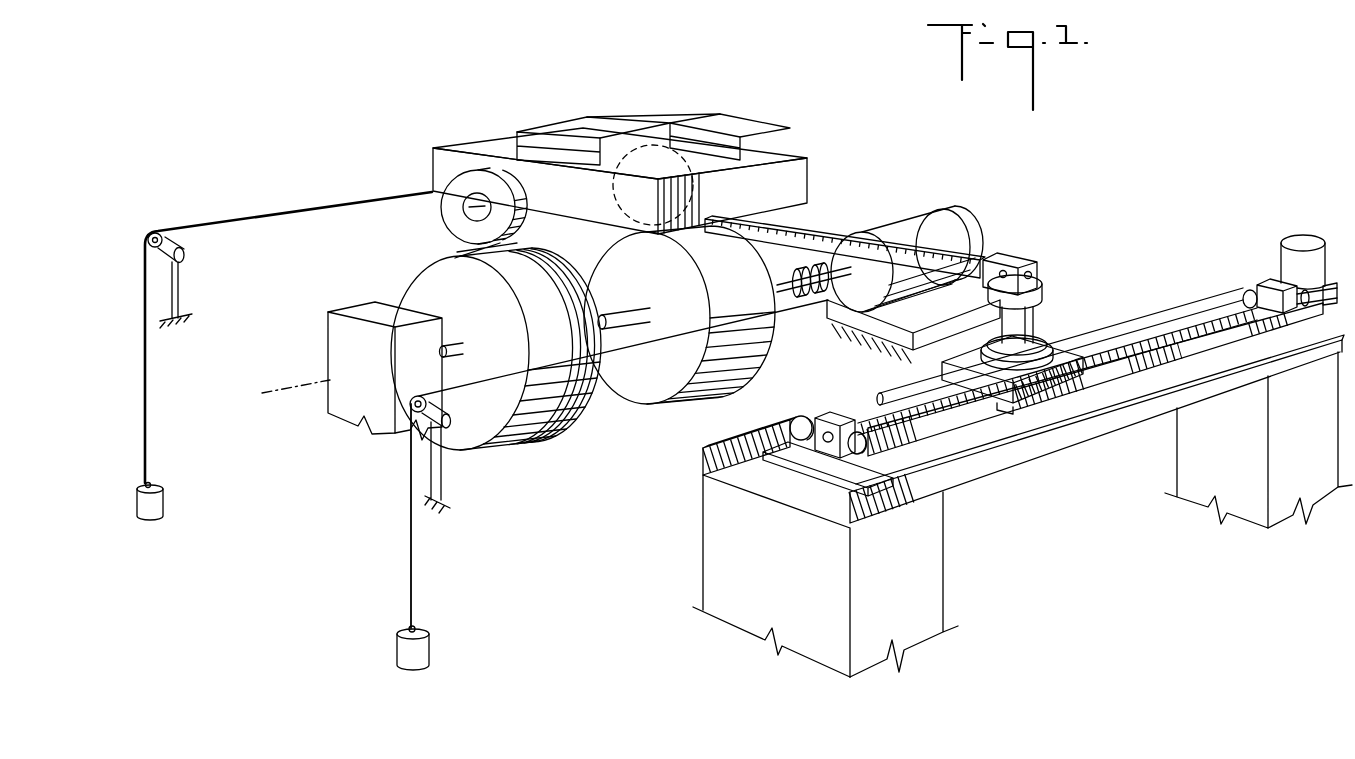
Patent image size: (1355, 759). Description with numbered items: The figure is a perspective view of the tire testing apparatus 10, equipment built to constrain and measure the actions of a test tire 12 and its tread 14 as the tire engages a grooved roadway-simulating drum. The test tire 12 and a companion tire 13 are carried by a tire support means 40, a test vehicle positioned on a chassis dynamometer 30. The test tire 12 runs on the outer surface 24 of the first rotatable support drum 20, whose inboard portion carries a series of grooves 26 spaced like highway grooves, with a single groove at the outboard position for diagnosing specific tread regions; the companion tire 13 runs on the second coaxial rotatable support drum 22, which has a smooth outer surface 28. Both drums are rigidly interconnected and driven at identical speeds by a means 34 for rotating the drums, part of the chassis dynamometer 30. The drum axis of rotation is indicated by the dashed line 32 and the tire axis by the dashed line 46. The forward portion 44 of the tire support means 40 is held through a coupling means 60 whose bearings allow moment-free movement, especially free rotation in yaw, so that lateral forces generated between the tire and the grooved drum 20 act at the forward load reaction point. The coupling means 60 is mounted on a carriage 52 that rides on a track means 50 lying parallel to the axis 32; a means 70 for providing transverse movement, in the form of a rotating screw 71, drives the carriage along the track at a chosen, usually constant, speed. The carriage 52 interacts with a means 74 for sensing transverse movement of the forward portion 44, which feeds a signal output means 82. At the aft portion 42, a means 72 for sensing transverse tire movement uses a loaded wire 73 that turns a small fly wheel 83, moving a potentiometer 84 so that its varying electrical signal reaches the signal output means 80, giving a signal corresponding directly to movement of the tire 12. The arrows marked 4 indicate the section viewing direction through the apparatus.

The section line 4- 4 is at (385, 142).
The tire testing apparatus 10 is at (1066, 178).
The test tire 12 is at (462, 207).
The companion tire 13 is at (702, 128).
The tire tread 14 is at (518, 193).
The first rotatable support drum 20 is at (497, 452).
The second coaxial rotatable support drum 22 is at (762, 359).
The outer surface of the first rotatable support drum 24 is at (455, 252).
The grooves 26 is at (547, 437).
The smooth outer surface 28 is at (688, 400).
The chassis dynamometer 30 is at (997, 215).
The axis of rotation of the support drum 32 is at (279, 386).
The means for rotating the drums 34 is at (953, 206).
The tire support means 40 is at (808, 166).
The aft portion of the tire support means 42 is at (500, 128).
The forward portion of the tire support means 44 is at (1007, 242).
The axis of rotation of the tires 46 is at (466, 214).
The track means 50 is at (1178, 315).
The carriage 52 is at (942, 369).
The coupling means 60 is at (1047, 277).
The means for providing transverse movement 70 is at (1280, 235).
The rotating screw 71 is at (1143, 336).
The means for sensing transverse movement of the test tire 72 is at (168, 222).
The loaded wire 73 is at (319, 207).
The means for sensing transverse movement of the forward portion 74 is at (407, 399).
The signal output means 80 is at (186, 255).
The signal output means 82 is at (410, 432).
The small fly wheel 83 is at (146, 231).
The potentiometer 84 is at (160, 258).